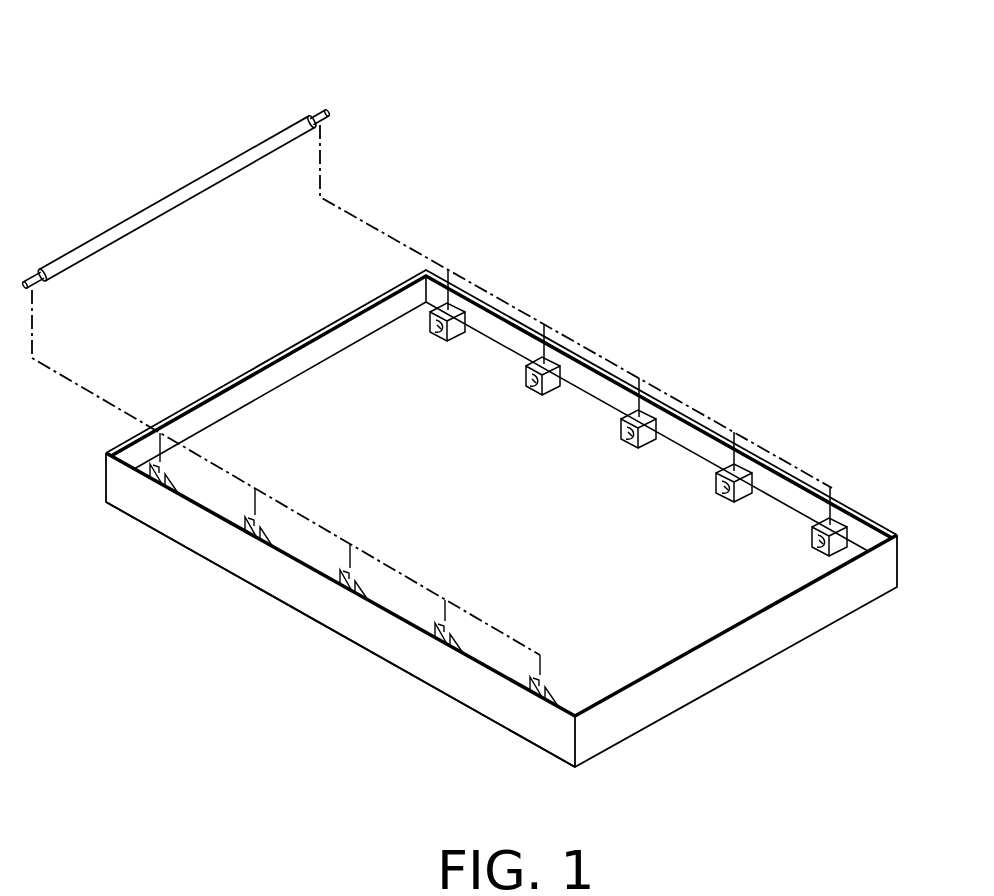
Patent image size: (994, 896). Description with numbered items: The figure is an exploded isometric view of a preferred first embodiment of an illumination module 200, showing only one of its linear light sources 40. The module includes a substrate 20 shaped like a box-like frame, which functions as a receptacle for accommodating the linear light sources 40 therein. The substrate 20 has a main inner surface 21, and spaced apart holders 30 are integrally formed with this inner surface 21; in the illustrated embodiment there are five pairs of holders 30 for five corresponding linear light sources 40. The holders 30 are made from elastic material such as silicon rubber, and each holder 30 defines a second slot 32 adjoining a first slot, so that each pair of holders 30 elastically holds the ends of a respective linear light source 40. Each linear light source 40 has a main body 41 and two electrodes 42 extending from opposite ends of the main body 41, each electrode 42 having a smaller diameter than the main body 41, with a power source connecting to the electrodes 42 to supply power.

The substrate 20 is at (500, 318).
The main inner surface 21 is at (315, 540).
The holder 30 is at (843, 520).
The second slot 32 is at (818, 557).
The linear light source 40 is at (176, 144).
The main body 41 is at (122, 228).
The electrode 42 is at (318, 108).
The illumination module 200 is at (536, 232).